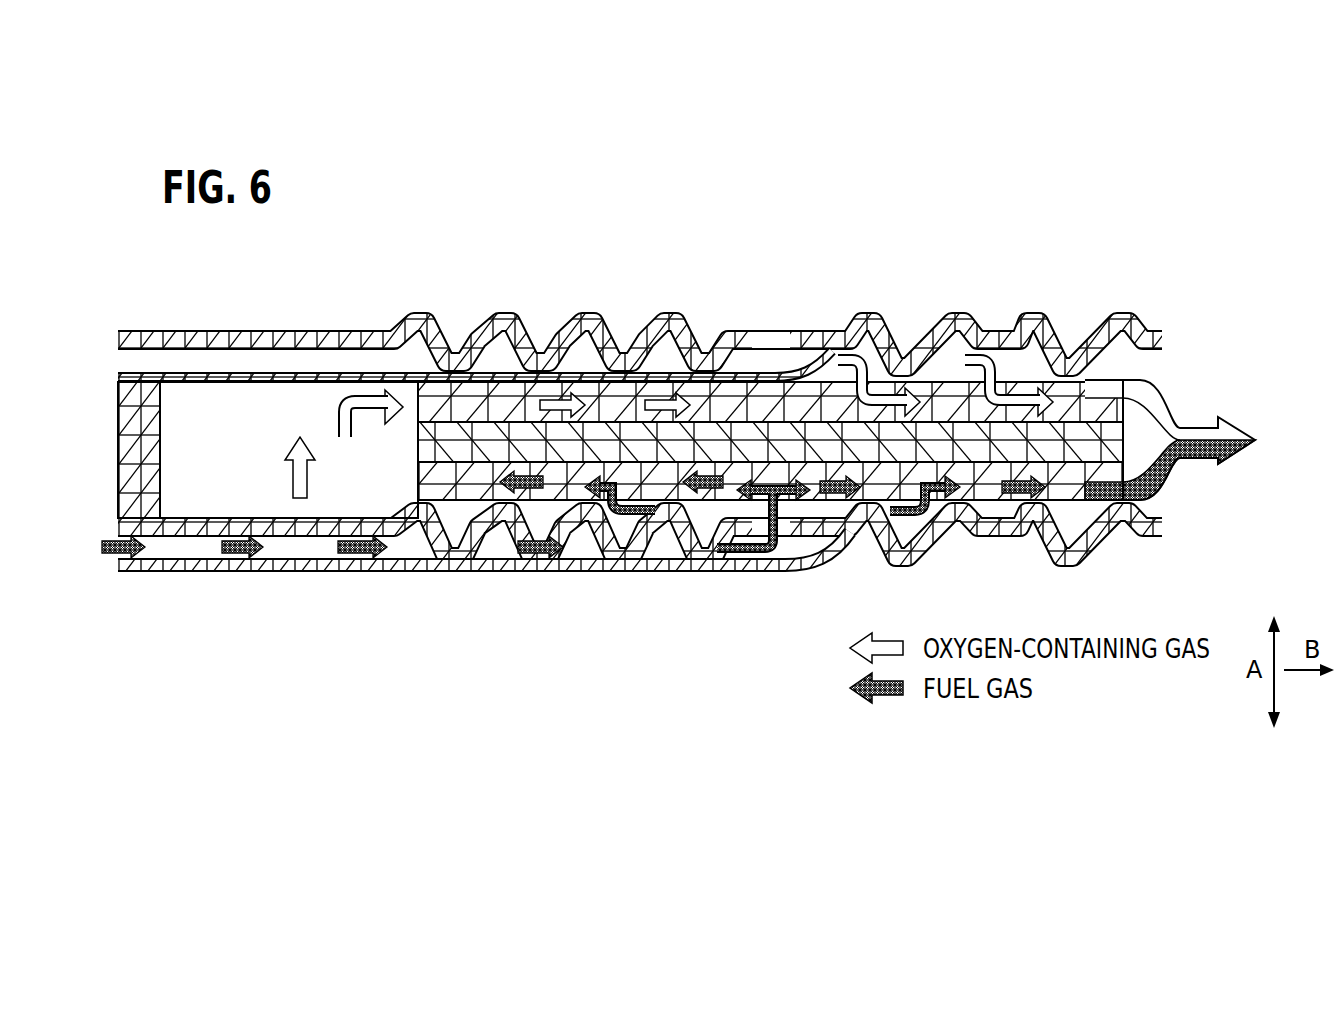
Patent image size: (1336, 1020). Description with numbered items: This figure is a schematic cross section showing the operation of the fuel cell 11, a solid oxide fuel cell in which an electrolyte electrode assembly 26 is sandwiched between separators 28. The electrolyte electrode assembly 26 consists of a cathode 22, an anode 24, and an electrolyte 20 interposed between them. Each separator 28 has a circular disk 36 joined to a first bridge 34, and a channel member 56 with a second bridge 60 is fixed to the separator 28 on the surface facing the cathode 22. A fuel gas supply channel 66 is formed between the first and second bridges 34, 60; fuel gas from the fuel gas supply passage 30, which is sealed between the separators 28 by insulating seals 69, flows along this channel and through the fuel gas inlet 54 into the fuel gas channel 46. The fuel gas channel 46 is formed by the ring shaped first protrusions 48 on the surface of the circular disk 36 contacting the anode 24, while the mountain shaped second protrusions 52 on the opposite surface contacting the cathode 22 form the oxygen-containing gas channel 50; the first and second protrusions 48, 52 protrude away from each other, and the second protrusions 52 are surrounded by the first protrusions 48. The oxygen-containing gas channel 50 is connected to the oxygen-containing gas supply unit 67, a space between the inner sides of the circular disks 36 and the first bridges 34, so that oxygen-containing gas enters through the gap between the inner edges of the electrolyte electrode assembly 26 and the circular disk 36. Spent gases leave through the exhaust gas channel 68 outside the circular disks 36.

The fuel cell 11 is at (430, 244).
The electrolyte 20 is at (997, 447).
The cathode 22 is at (1008, 413).
The anode 24 is at (977, 480).
The electrolyte electrode assembly 26 is at (1045, 578).
The separator 28 is at (1166, 310).
The fuel gas supply passage 30 is at (97, 488).
The first bridge 34 is at (196, 331).
The circular disk 36 is at (994, 328).
The fuel gas channel 46 is at (812, 508).
The first protrusion 48 is at (583, 312).
The oxygen-containing gas channel 50 is at (882, 375).
The second protrusion 52 is at (945, 378).
The fuel gas inlet 54 is at (782, 530).
The channel member 56 is at (240, 385).
The second bridge 60 is at (200, 383).
The fuel gas supply channel 66 is at (258, 364).
The oxygen-containing gas supply unit 67 is at (213, 488).
The exhaust gas channel 68 is at (1182, 428).
The insulating seal 69 is at (140, 447).